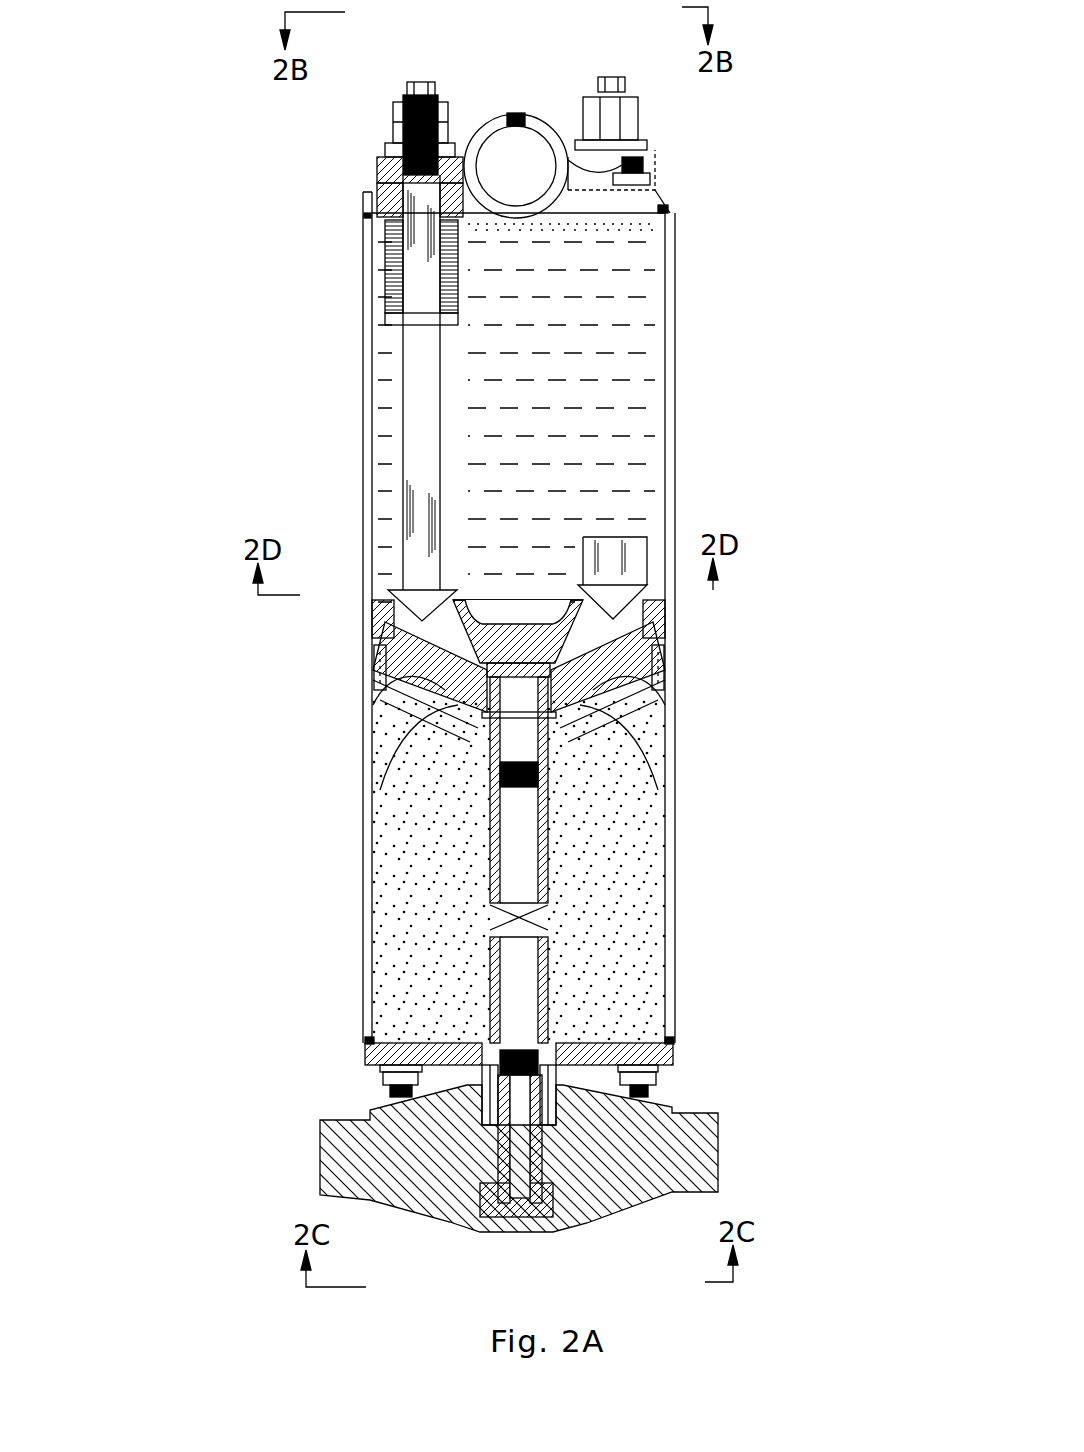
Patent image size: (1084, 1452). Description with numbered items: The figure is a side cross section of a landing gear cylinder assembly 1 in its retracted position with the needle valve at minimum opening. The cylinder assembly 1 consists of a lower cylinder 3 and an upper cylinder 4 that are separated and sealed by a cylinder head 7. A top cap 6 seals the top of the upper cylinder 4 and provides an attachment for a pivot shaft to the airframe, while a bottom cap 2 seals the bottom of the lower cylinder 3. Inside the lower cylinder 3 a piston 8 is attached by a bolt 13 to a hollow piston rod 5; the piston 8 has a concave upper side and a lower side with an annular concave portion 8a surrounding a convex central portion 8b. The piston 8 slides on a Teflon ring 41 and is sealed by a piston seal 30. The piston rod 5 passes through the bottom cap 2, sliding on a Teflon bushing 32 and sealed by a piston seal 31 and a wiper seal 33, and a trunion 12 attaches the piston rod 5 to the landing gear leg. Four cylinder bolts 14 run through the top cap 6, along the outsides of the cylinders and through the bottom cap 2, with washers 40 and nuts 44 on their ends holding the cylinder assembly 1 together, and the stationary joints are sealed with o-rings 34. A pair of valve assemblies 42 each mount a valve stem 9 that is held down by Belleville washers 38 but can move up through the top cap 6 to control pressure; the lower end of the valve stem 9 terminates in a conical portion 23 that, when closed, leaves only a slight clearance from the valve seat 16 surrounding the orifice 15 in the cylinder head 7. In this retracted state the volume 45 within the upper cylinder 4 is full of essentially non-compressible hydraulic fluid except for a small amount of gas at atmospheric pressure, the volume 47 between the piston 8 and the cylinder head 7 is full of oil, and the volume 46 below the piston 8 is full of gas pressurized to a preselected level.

The cylinder assembly 1 is at (722, 298).
The bottom cap 2 is at (676, 1048).
The lower cylinder 3 is at (676, 833).
The upper cylinder 4 is at (676, 470).
The piston rod 5 is at (545, 868).
The top cap 6 is at (548, 138).
The cylinder head 7 is at (545, 642).
The piston 8 is at (400, 782).
The annular concave portion 8a is at (378, 727).
The convex central portion 8b is at (380, 815).
The valve stem 9 is at (410, 396).
The trunion 12 is at (612, 1215).
The bolt 13 is at (486, 642).
The cylinder bolts 14 is at (647, 150).
The orifice 15 is at (380, 732).
The valve seat 16 is at (655, 615).
The conical portion 23 is at (648, 594).
The piston seal 30 is at (373, 667).
The piston seal 31 is at (466, 1046).
The Teflon bushing 32 is at (548, 1050).
The wiper seal 33 is at (565, 1075).
The o-ring 34 is at (668, 207).
The Belleville washers 38 is at (457, 305).
The washers 40 is at (660, 195).
The Teflon ring 41 is at (655, 688).
The valve assemblies 42 is at (362, 158).
The nuts 44 is at (657, 173).
The volume 45 is at (606, 380).
The volume 46 is at (638, 890).
The volume 47 is at (652, 650).